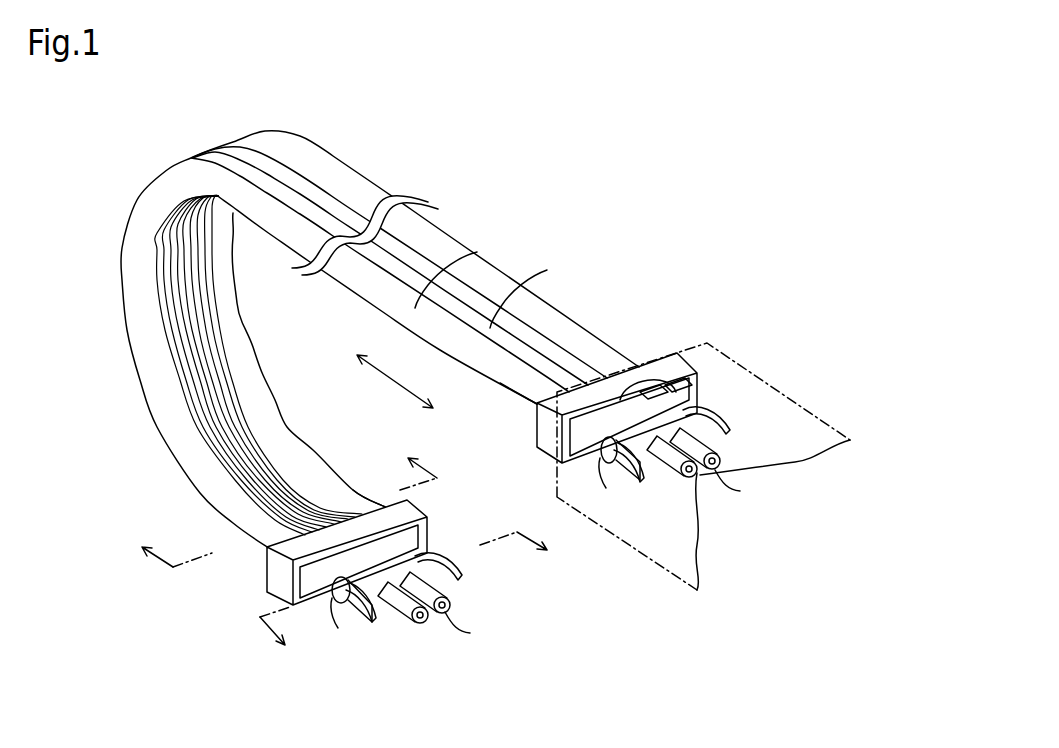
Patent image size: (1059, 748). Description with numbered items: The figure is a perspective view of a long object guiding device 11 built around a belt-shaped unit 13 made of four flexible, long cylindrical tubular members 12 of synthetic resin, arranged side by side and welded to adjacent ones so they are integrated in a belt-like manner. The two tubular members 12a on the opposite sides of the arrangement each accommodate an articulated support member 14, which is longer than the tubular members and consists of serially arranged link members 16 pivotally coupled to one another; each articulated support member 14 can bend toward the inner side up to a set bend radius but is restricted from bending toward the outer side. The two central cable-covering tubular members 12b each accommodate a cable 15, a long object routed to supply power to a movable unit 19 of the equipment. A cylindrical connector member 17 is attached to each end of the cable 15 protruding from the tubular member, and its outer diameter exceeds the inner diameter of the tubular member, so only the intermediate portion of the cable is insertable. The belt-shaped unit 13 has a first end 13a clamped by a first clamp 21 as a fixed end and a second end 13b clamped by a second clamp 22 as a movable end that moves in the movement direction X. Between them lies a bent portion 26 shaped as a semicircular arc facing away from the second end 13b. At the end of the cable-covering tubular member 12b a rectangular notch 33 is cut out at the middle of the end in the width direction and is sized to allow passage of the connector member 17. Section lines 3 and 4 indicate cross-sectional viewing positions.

The section line III-III 3 is at (278, 499).
The section line IV-IV 4 is at (416, 602).
The long object guiding device 11 is at (454, 151).
The tubular member 12 is at (585, 195).
The tubular member 12a is at (487, 278).
The cable-covering tubular member 12b is at (523, 331).
The belt-shaped unit 13 is at (344, 136).
The first end 13a is at (451, 532).
The second end 13b is at (577, 463).
The articulated support member 14 is at (476, 596).
The cable 15 is at (397, 590).
The link member 16 is at (457, 567).
The connector member 17 is at (430, 623).
The movable unit 19 is at (752, 373).
The first clamp 21 is at (275, 573).
The second clamp 22 is at (673, 367).
The bent portion 26 is at (125, 234).
The notch 33 is at (686, 397).